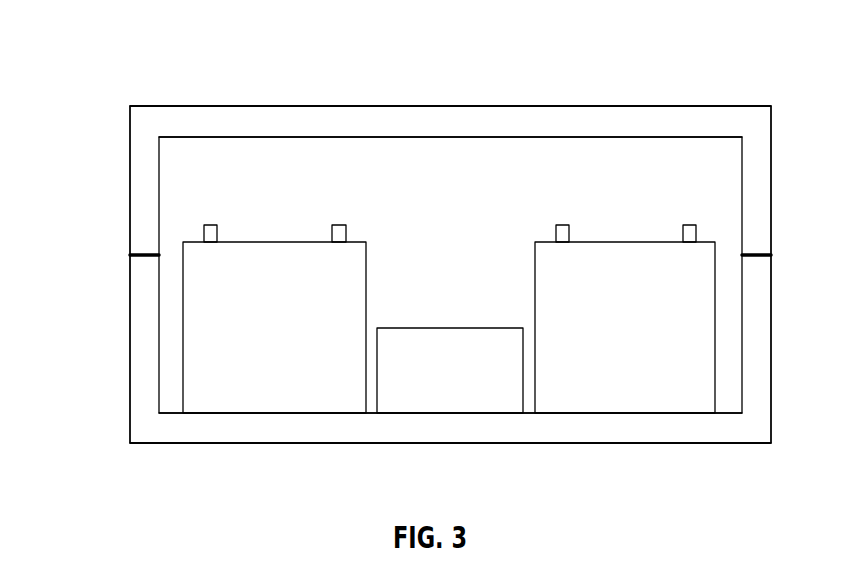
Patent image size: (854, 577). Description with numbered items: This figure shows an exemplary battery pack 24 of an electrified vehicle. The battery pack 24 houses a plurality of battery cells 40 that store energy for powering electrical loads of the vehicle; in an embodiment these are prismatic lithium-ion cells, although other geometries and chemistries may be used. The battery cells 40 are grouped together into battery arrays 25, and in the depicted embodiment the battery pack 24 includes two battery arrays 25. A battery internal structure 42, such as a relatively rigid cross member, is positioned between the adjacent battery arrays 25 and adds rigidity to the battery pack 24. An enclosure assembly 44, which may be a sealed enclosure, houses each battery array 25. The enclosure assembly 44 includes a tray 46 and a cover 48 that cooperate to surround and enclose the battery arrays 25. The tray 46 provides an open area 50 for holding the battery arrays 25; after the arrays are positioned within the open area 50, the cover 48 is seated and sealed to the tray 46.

The battery pack 24 is at (675, 56).
The enclosure assembly 44 is at (120, 137).
The cover 48 is at (223, 125).
The tray 46 is at (263, 432).
The open area 50 is at (436, 218).
The battery cells 40 is at (261, 340).
The battery arrays 25 is at (273, 226).
The battery internal structure 42 is at (457, 403).